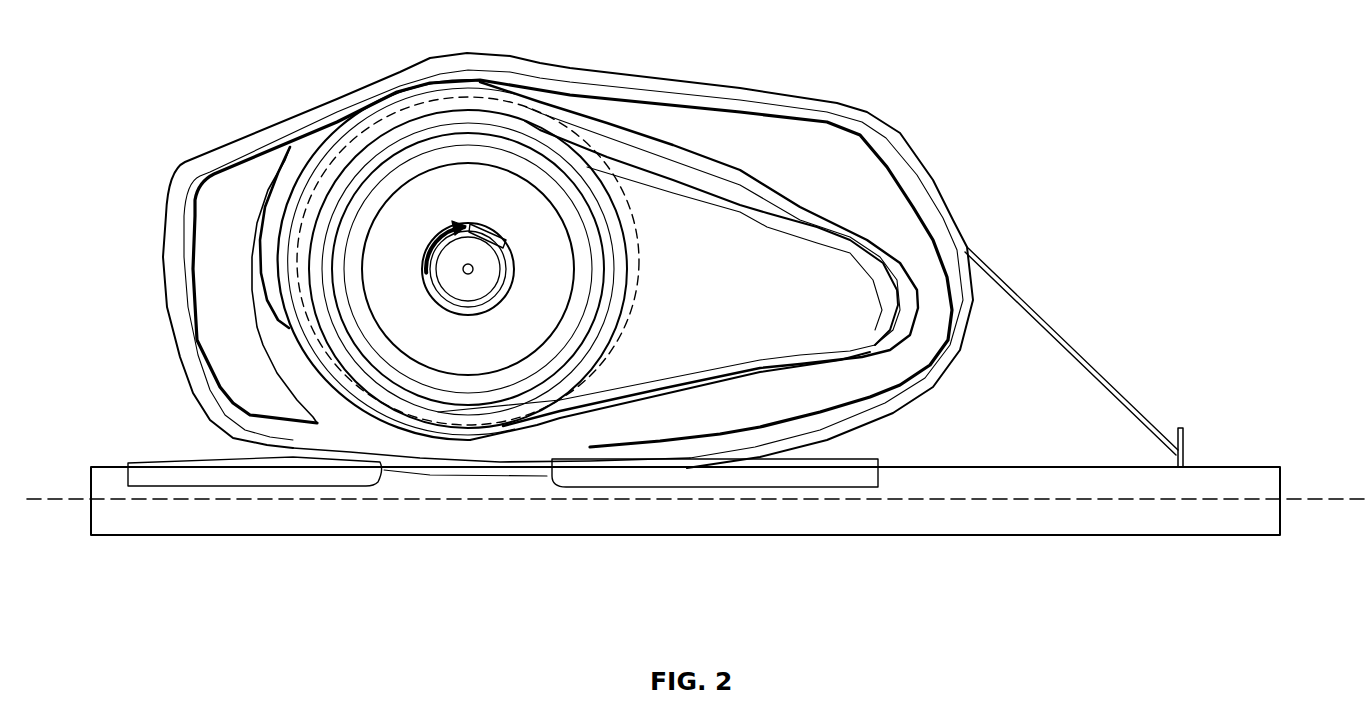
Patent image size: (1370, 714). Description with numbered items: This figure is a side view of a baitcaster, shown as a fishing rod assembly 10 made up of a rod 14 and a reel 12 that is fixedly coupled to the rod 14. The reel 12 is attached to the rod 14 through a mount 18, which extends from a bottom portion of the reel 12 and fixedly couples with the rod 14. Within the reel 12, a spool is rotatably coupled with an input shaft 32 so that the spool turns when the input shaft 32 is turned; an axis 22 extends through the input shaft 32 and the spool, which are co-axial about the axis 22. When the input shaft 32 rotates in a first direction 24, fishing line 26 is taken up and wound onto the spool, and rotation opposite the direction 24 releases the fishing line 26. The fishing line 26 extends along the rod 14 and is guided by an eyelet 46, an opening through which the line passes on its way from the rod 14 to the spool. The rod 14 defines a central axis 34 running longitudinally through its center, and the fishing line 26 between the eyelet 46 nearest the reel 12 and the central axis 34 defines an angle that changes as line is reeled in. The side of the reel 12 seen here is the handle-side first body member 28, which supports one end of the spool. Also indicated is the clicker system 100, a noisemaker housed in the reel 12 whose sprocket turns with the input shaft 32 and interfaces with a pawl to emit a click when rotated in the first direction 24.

The fishing rod assembly 10 is at (105, 70).
The reel 12 is at (560, 249).
The rod 14 is at (710, 537).
The mount 18 is at (152, 478).
The axis 22 is at (470, 265).
The direction 24 is at (423, 268).
The fishing line 26 is at (1088, 355).
The first body member 28 is at (817, 112).
The input shaft 32 is at (466, 315).
The central axis 34 is at (1328, 499).
The eyelet 46 is at (1184, 448).
The clicker system 100 is at (638, 262).